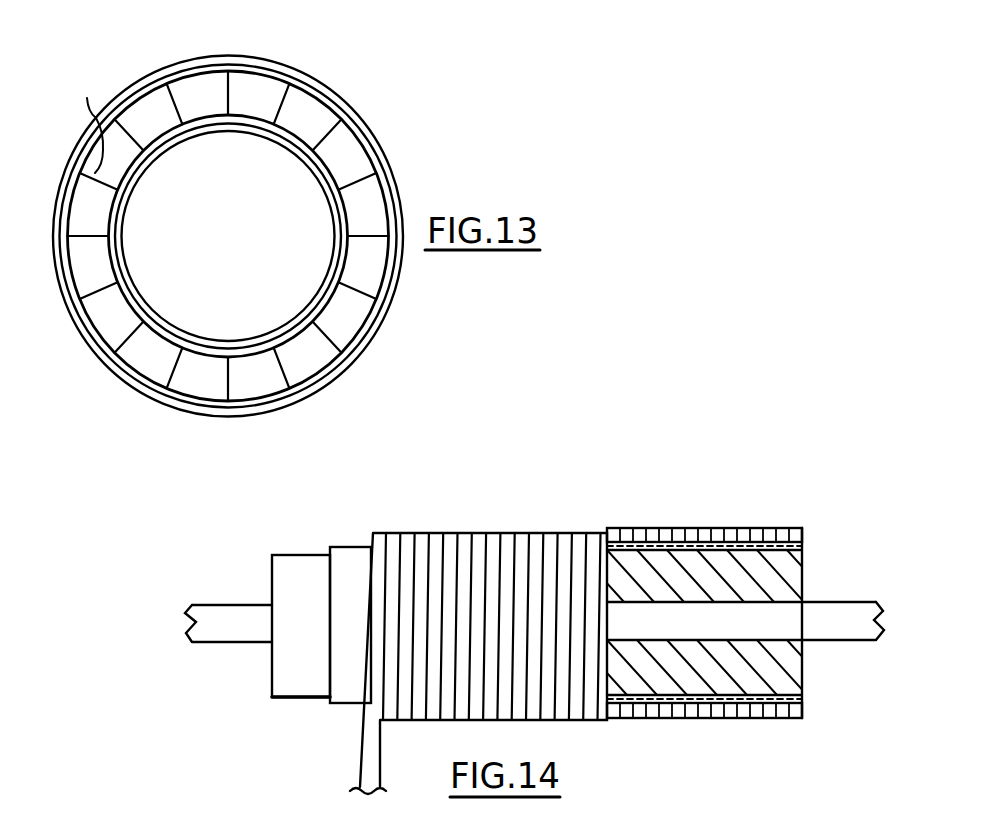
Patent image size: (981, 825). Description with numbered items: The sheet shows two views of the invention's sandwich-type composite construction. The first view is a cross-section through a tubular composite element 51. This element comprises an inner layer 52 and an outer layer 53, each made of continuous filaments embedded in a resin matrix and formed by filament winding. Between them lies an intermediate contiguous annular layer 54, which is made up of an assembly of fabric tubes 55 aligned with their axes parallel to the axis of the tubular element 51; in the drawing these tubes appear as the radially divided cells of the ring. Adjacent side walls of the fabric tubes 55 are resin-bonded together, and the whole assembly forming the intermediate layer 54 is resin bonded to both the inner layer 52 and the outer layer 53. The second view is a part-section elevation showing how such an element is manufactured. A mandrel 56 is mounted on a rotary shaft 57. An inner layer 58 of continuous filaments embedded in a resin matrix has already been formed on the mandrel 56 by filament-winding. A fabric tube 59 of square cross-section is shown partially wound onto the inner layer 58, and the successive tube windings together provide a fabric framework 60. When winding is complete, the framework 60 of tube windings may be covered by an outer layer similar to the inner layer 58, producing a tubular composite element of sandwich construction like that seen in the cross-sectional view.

In FIG. 13, the tubular composite element 51 is at (171, 52).
In FIG. 13, the inner layer 52 is at (243, 120).
In FIG. 13, the outer layer 53 is at (281, 70).
In FIG. 13, the intermediate contiguous annular layer 54 is at (140, 357).
In FIG. 13, the fabric tubes 55 is at (162, 96).
In FIG. 14, the mandrel 56 is at (300, 683).
In FIG. 14, the rotary shaft 57 is at (220, 617).
In FIG. 14, the inner layer 58 is at (303, 567).
In FIG. 14, the fabric tube 59 is at (715, 530).
In FIG. 14, the fabric framework 60 is at (489, 556).